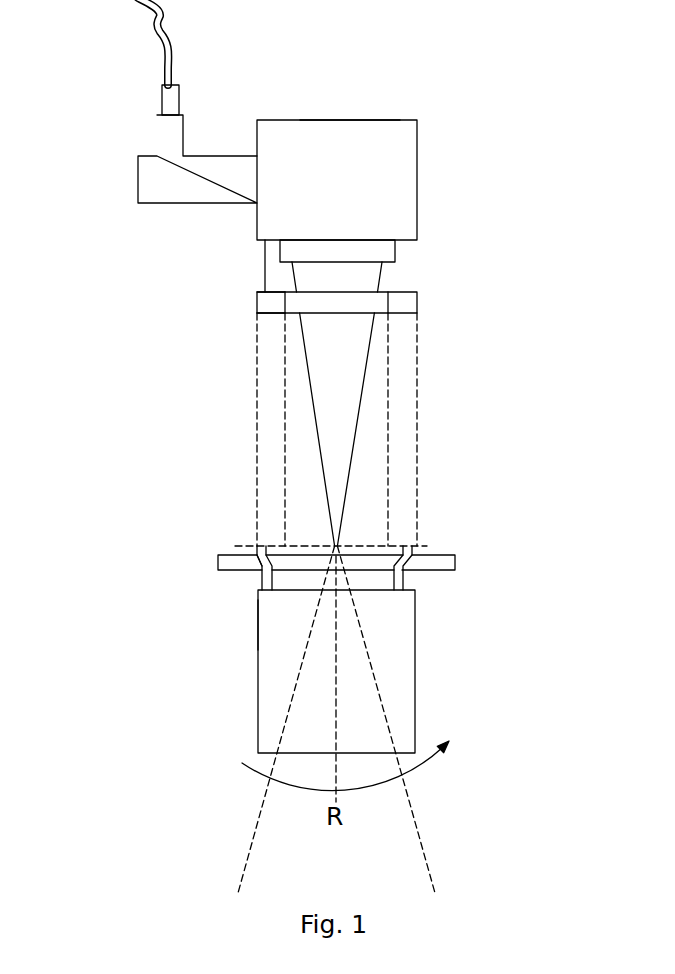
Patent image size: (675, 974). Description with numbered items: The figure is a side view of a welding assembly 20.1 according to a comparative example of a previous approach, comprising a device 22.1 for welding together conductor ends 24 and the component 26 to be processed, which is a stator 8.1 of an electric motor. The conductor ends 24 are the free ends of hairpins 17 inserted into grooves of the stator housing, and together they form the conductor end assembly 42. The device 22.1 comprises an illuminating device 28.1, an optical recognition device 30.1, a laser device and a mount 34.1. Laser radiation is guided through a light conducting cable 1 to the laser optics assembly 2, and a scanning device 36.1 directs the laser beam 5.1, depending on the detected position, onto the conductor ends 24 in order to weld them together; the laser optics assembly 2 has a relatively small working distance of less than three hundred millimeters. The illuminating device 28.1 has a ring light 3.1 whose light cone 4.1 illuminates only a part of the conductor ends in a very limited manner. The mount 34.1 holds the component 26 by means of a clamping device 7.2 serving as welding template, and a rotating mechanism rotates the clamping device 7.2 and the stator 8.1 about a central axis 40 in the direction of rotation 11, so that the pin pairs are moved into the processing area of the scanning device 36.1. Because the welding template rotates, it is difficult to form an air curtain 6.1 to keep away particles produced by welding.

The light conducting cable 1 is at (148, 14).
The laser optics assembly 2 is at (403, 177).
The ring light 3.1 is at (405, 303).
The light cone 4.1 is at (407, 350).
The laser beam 5.1 is at (348, 413).
The air curtain 6.1 is at (423, 550).
The clamping device 7.2 is at (228, 565).
The stator 8.1 is at (401, 625).
The direction of rotation 11 is at (370, 766).
The hairpin 17 is at (258, 548).
The welding assembly 20.1 is at (590, 238).
The device for welding together conductor ends 22.1 is at (128, 127).
The conductor ends 24 is at (257, 558).
The component 26 is at (237, 623).
The illuminating device 28.1 is at (257, 298).
The optical recognition device 30.1 is at (257, 310).
The mount 34.1 is at (485, 563).
The scanning device 36.1 is at (360, 120).
The central axis 40 is at (337, 692).
The conductor end assembly 42 is at (254, 532).